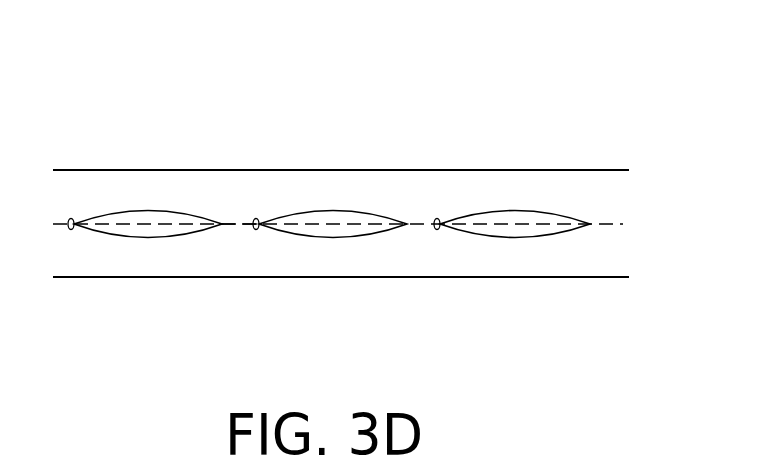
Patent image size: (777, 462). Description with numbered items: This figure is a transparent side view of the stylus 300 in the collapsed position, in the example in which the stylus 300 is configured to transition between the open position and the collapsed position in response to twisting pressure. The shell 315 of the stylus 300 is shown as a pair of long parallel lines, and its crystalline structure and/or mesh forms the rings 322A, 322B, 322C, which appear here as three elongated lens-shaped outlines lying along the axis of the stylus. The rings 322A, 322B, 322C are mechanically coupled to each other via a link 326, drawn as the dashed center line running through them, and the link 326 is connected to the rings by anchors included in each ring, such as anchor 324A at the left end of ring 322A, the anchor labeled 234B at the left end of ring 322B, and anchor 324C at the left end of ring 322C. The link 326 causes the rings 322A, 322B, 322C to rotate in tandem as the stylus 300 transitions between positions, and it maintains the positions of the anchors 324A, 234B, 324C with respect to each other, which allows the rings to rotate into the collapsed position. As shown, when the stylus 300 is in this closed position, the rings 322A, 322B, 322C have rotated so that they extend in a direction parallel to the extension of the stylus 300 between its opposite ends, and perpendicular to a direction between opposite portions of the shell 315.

The stylus 300 is at (405, 85).
The shell 315 is at (63, 169).
The link 326 is at (228, 222).
The anchor 324A is at (71, 229).
The ring 322A is at (156, 236).
The valve/orifice 234B is at (256, 229).
The ring 322B is at (337, 236).
The anchor 324C is at (437, 229).
The ring 322C is at (543, 236).